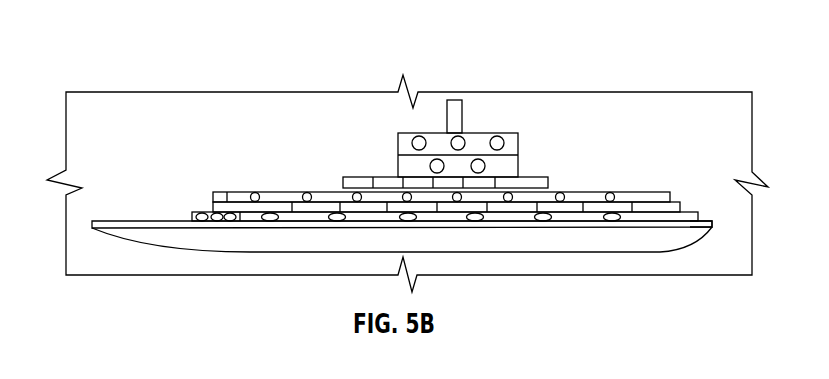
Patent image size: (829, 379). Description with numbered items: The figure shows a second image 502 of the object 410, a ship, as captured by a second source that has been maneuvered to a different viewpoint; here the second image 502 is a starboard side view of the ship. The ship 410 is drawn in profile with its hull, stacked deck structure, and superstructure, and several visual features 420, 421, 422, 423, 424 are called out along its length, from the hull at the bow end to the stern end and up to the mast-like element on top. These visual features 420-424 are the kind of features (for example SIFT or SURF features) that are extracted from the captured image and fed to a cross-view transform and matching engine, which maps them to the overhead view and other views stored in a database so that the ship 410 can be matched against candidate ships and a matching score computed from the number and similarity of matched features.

The second image 502 is at (642, 68).
The object 410 is at (547, 163).
The visual feature 420 is at (107, 220).
The visual feature 421 is at (210, 213).
The visual feature 422 is at (352, 180).
The visual feature 423 is at (458, 123).
The visual feature 424 is at (707, 220).